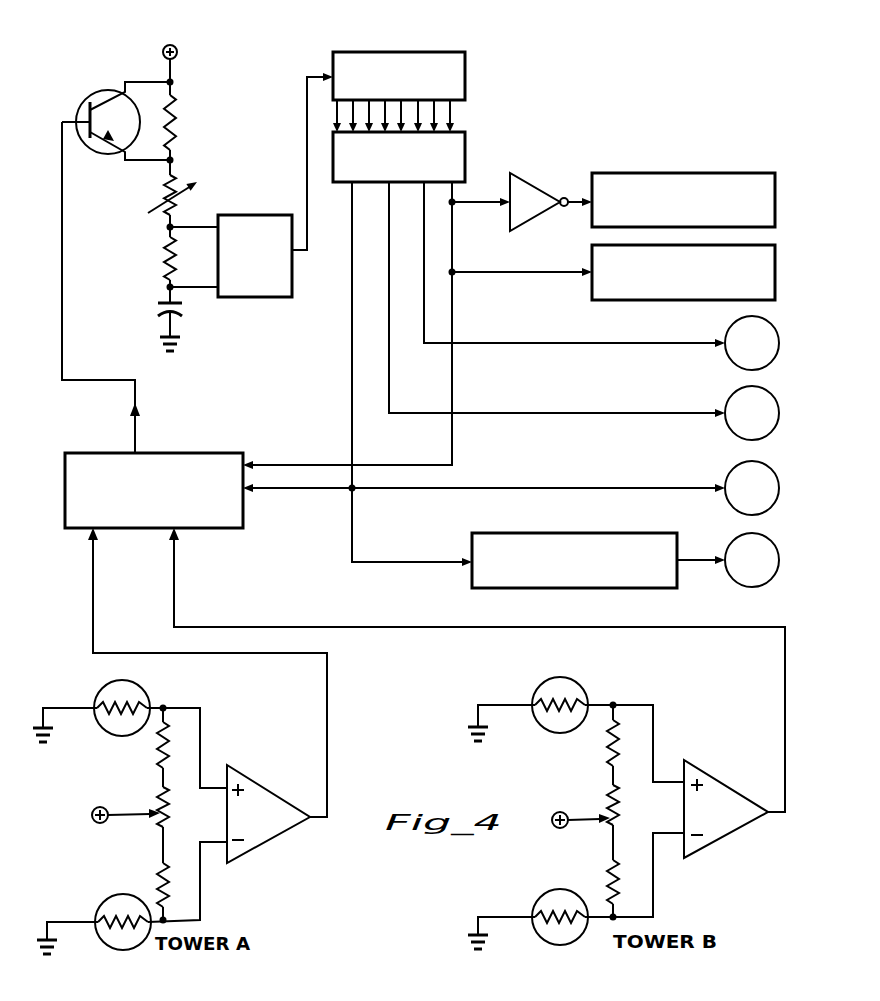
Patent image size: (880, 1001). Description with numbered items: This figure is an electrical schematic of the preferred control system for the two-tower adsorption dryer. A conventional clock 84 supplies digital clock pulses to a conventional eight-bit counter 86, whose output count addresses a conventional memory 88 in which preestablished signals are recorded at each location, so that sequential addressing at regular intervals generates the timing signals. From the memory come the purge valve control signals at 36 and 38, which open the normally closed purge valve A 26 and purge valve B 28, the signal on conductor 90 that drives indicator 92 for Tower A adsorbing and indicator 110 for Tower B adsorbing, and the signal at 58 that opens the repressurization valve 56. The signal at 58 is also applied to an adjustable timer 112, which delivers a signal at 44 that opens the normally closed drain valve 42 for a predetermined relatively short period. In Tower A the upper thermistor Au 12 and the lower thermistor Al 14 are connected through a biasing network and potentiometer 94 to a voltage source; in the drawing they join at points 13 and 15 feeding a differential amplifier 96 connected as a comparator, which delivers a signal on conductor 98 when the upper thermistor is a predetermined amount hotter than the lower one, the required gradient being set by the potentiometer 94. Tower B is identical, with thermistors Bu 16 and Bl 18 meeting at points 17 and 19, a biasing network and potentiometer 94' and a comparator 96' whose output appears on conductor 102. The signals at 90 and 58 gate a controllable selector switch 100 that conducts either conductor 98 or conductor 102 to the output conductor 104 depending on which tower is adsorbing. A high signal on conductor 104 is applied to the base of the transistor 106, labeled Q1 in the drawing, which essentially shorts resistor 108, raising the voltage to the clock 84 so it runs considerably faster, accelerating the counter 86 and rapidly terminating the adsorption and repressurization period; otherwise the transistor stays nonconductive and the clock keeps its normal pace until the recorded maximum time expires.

The transistor Q1 is at (111, 121).
The transistor 106 is at (135, 82).
The resistor 108 is at (178, 100).
The clock 84 is at (272, 215).
The output conductor 104 is at (97, 291).
The eight bit counter 86 is at (463, 52).
The memory 88 is at (465, 136).
The conductor 90 is at (468, 204).
The purge valve control signal 38 is at (597, 345).
The purge valve control signal 36 is at (518, 413).
The signal 58 is at (318, 490).
The indicator 110 is at (670, 173).
The indicator 92 is at (595, 297).
The purge valve B 28 is at (724, 352).
The purge valve A 26 is at (735, 434).
The repressurization valve 56 is at (724, 506).
The drain valve 42 is at (742, 584).
The adjustable timer 112 is at (558, 533).
The drain valve control signal 44 is at (695, 557).
The controllable selector switch 100 is at (201, 453).
The conductor 98 is at (93, 602).
The conductor 102 is at (174, 602).
The upper temperature thermistor Au 12 is at (115, 684).
The junction of tower A upper thermistor 13 is at (165, 705).
The biasing network potentiometer 94 is at (130, 814).
The lower temperature thermistor Al 14 is at (115, 895).
The junction of tower A lower thermistor 15 is at (203, 908).
The differential amplifier comparator 96 is at (272, 822).
The temperature sensor Bu 16 is at (553, 680).
The junction of tower B upper thermistor 17 is at (613, 700).
The biasing network potentiometer 94' is at (580, 811).
The temperature sensor Bl 18 is at (540, 893).
The junction of tower B lower thermistor 19 is at (611, 912).
The comparator 96' is at (726, 819).